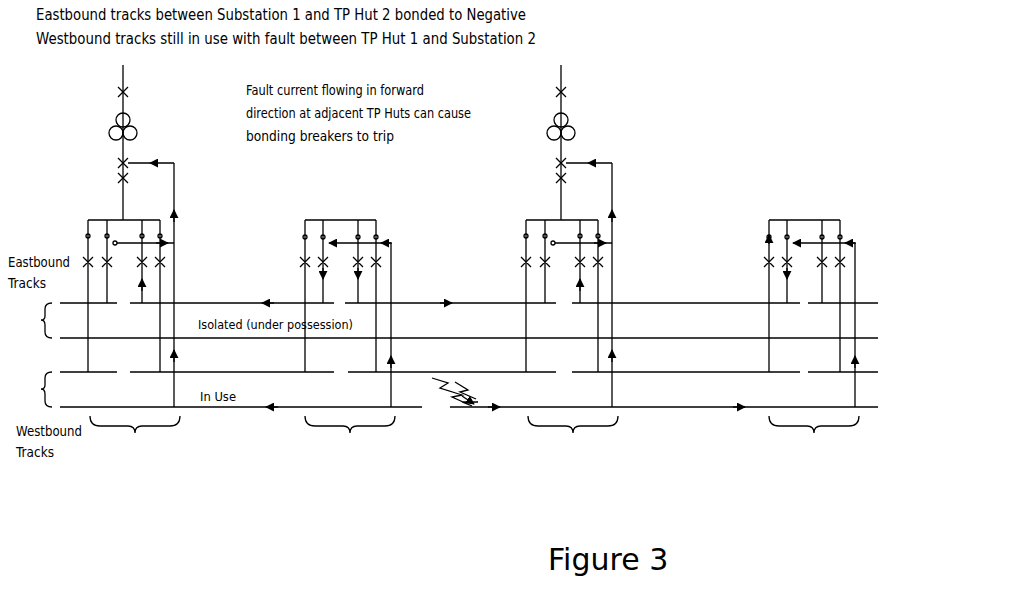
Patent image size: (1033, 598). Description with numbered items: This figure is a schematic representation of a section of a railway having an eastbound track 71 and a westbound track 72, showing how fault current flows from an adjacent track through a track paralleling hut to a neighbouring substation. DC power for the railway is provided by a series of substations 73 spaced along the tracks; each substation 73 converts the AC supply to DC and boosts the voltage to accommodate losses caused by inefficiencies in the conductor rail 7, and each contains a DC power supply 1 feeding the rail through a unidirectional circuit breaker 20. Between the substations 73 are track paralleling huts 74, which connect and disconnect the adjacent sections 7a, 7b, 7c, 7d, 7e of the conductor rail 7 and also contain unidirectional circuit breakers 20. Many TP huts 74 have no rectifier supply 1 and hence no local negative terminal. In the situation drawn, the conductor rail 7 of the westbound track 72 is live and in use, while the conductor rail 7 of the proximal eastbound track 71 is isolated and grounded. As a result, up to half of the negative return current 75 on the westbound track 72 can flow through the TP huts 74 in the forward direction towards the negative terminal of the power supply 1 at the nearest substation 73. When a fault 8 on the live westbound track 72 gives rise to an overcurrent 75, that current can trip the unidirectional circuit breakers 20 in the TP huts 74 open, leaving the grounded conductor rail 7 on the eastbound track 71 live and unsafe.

The DC power supply 1 is at (112, 121).
The positive conductor rail 7 is at (422, 284).
The conductor rail section 7a is at (78, 371).
The conductor rail section 7b is at (187, 304).
The conductor rail section 7c is at (487, 304).
The conductor rail section 7d is at (672, 304).
The conductor rail section 7e is at (878, 304).
The fault 8 is at (453, 404).
The unidirectional circuit breaker 20 is at (304, 260).
The eastbound track 71 is at (445, 320).
The westbound track 72 is at (445, 390).
The substation 73 is at (350, 322).
The track paralleling hut 74 is at (581, 351).
The negative return current 75 is at (338, 271).